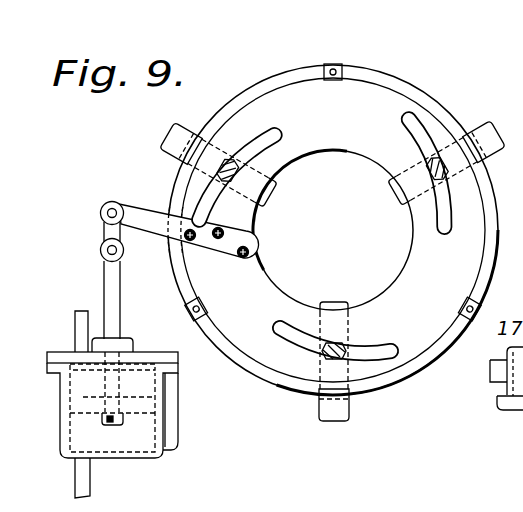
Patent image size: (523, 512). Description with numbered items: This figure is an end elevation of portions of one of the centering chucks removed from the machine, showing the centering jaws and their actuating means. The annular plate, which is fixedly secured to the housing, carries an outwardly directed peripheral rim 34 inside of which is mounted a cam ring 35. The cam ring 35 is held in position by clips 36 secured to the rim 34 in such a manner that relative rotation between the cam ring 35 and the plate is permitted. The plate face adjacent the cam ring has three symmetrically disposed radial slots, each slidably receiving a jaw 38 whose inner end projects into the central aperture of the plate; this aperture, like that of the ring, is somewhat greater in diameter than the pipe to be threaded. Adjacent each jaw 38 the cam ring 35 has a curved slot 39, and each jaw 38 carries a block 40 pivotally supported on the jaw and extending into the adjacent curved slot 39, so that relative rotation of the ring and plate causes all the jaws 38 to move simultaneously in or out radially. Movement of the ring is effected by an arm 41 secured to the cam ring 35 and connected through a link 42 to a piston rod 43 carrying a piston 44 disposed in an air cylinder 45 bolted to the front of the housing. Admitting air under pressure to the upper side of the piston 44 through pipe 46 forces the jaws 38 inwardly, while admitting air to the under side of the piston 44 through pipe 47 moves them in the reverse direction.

The peripheral rim 34 is at (397, 77).
The cam ring 35 is at (333, 203).
The clips 36 is at (340, 65).
The jaw 38 is at (170, 137).
The curved slot 39 is at (266, 143).
The block 40 is at (425, 150).
The arm 41 is at (147, 213).
The link 42 is at (115, 233).
The piston rod 43 is at (115, 303).
The piston 44 is at (83, 397).
The air cylinder 45 is at (158, 453).
The pipe 46 is at (75, 336).
The pipe 47 is at (75, 476).